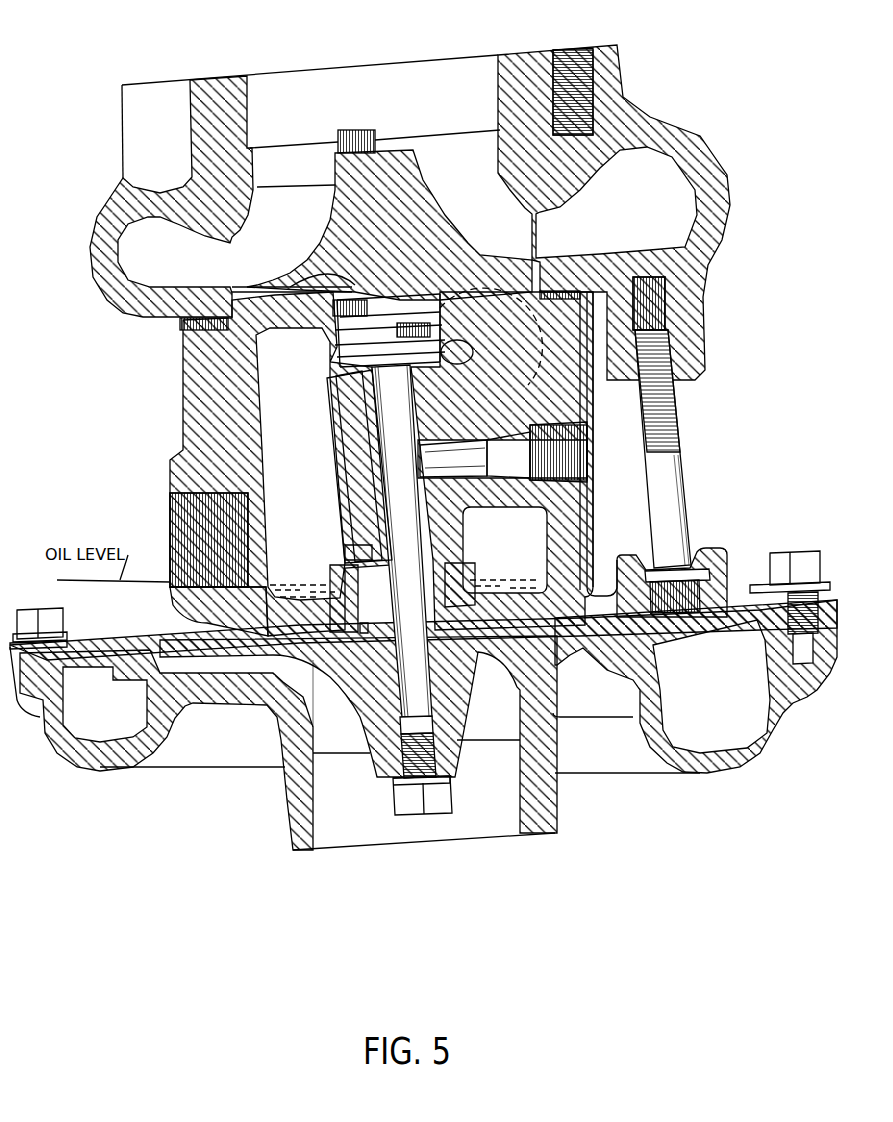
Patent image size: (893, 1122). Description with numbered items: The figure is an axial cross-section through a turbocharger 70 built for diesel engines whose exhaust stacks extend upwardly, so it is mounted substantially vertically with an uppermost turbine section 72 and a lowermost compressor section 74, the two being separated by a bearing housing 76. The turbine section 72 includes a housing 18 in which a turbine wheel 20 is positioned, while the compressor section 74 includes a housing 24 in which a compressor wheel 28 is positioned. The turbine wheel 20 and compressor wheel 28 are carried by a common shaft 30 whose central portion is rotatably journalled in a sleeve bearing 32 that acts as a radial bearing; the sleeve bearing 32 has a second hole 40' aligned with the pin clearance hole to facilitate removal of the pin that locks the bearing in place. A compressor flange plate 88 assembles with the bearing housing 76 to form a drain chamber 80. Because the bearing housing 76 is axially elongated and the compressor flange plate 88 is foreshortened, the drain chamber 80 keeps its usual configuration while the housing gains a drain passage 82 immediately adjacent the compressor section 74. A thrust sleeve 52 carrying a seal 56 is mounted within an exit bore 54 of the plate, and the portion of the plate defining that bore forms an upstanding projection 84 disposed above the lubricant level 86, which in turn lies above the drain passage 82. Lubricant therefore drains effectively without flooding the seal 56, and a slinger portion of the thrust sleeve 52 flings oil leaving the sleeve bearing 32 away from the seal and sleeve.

The housing 18 is at (705, 207).
The turbine wheel 20 is at (398, 190).
The housing 24 is at (738, 755).
The compressor wheel 28 is at (457, 723).
The shaft 30 is at (352, 380).
The sleeve bearing 32 is at (357, 417).
The second hole 40' is at (439, 452).
The thrust sleeve 52 is at (352, 545).
The exit bore 54 is at (476, 587).
The seal 56 is at (365, 633).
The turbocharger 70 is at (729, 353).
The turbine section 72 is at (676, 108).
The compressor section 74 is at (599, 788).
The bearing housing 76 is at (595, 510).
The drain chamber 80 is at (521, 542).
The drain passage 82 is at (180, 545).
The upstanding projection 84 is at (327, 585).
The lubricant level 86 is at (275, 585).
The compressor flange plate 88 is at (605, 593).